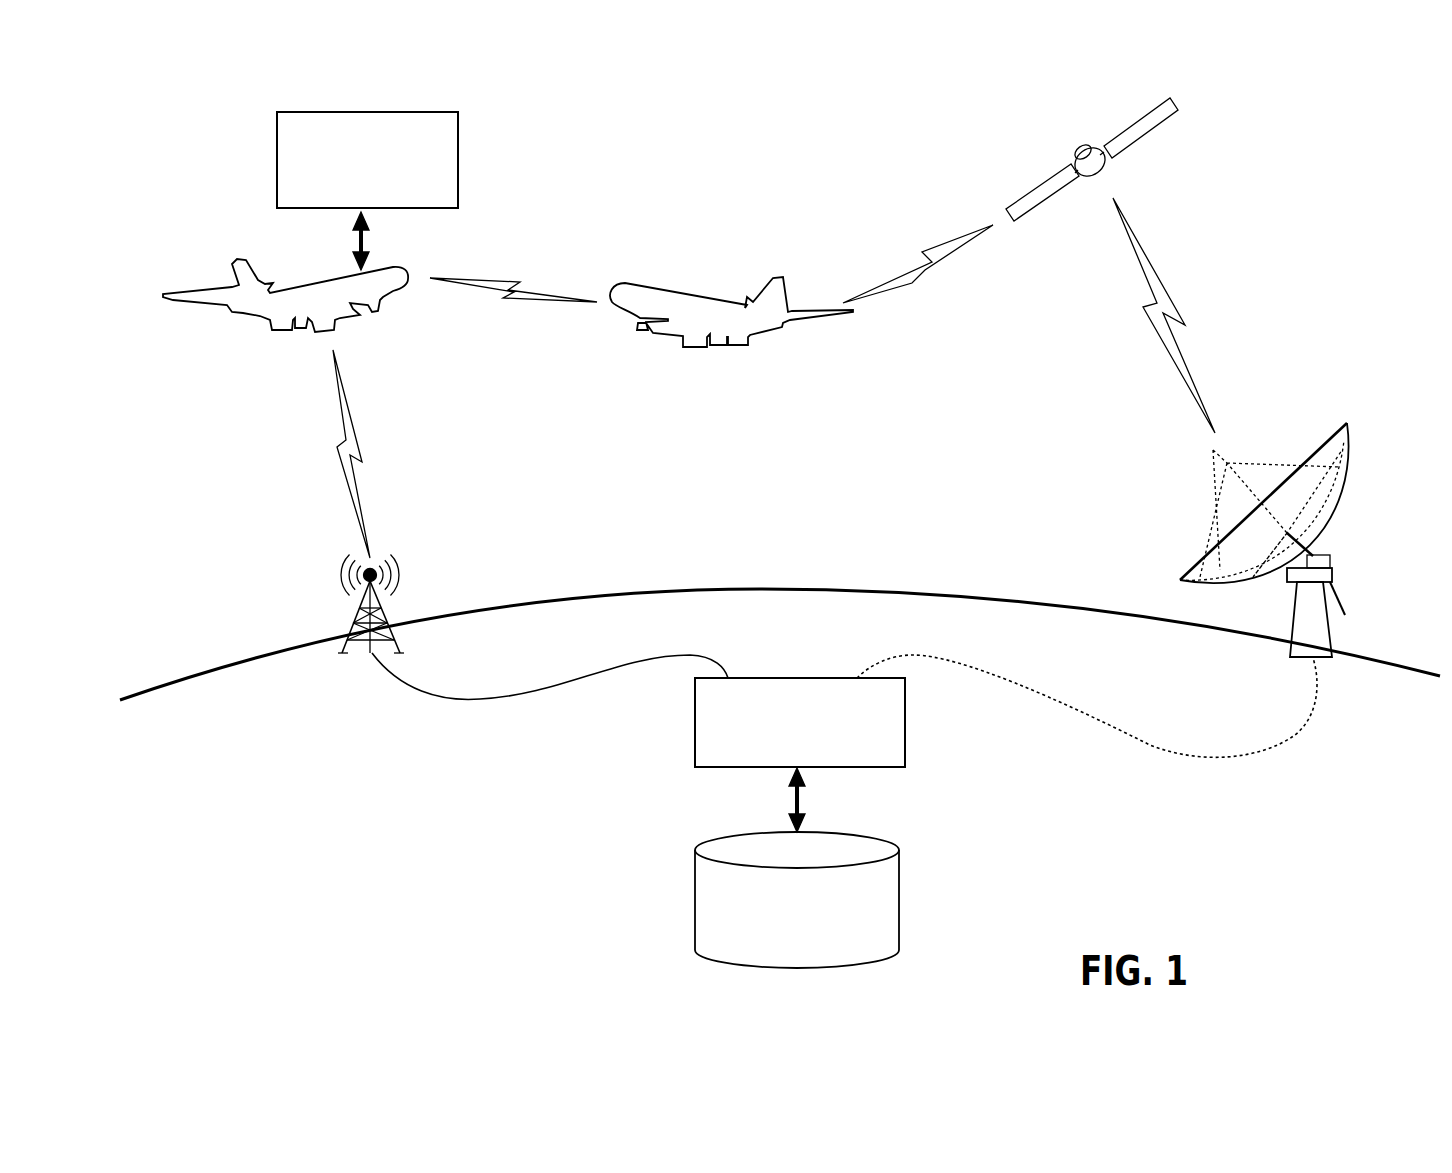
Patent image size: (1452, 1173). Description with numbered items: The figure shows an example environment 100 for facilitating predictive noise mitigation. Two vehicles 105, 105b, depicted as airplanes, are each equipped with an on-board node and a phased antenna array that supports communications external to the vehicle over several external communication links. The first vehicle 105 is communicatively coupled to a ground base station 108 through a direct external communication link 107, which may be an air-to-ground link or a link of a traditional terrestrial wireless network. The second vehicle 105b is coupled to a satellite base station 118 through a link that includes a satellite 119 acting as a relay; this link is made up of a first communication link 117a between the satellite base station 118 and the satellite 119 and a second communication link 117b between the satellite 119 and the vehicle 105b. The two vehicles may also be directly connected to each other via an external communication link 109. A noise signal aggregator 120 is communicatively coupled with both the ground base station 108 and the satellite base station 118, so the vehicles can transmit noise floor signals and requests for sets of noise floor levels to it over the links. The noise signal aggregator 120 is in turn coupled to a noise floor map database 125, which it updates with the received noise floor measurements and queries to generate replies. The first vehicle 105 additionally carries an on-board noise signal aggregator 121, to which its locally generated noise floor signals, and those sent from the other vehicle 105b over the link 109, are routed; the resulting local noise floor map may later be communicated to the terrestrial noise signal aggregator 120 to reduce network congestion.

The environment 100 is at (1280, 150).
The vehicle 105 is at (240, 258).
The vehicle 105b is at (783, 275).
The direct external communication link 107 is at (363, 445).
The ground base station 108 is at (385, 613).
The external communication link 109 is at (508, 278).
The first communication link 117a is at (1177, 310).
The second communication link 117b is at (950, 247).
The satellite base station 118 is at (1333, 562).
The satellite 119 is at (1087, 153).
The noise signal aggregator 120 is at (907, 715).
The on-board noise signal aggregator 121 is at (348, 110).
The noise floor map database 125 is at (900, 893).